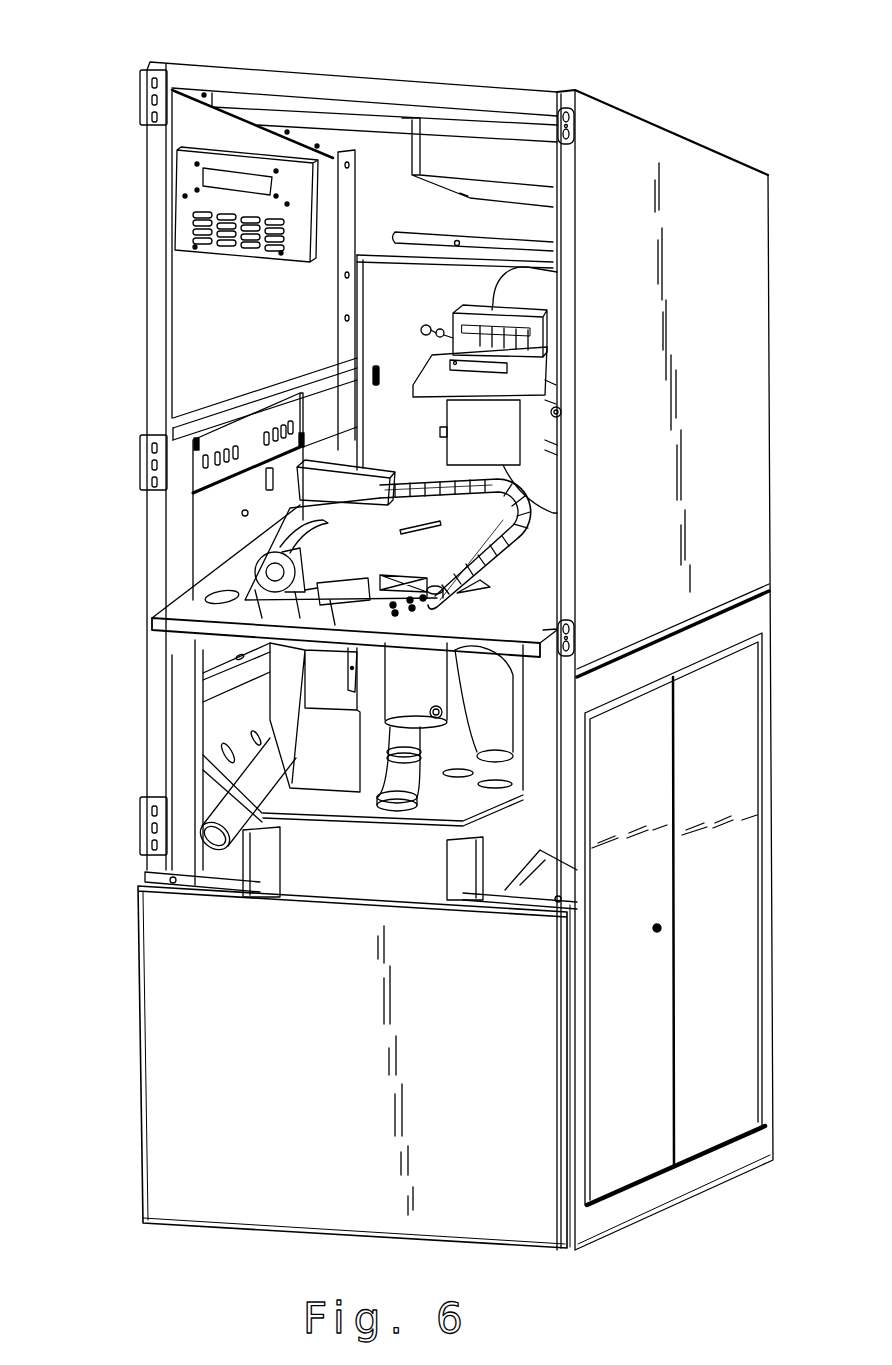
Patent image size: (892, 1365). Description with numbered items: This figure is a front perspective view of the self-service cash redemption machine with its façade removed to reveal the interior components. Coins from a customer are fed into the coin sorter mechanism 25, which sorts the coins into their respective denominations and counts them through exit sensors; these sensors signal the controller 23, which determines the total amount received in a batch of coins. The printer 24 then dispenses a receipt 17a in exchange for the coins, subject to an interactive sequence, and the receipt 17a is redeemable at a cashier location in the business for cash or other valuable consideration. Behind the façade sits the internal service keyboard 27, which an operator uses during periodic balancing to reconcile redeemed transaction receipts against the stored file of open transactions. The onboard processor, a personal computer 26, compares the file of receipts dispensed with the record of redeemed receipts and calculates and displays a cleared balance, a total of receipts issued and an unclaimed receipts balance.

The receipt 17a is at (518, 430).
The controller 23 is at (193, 470).
The printer 24 is at (423, 390).
The coin sorter mechanism 25 is at (247, 570).
The personal computer 26 is at (505, 165).
The internal keyboard 27 is at (193, 200).